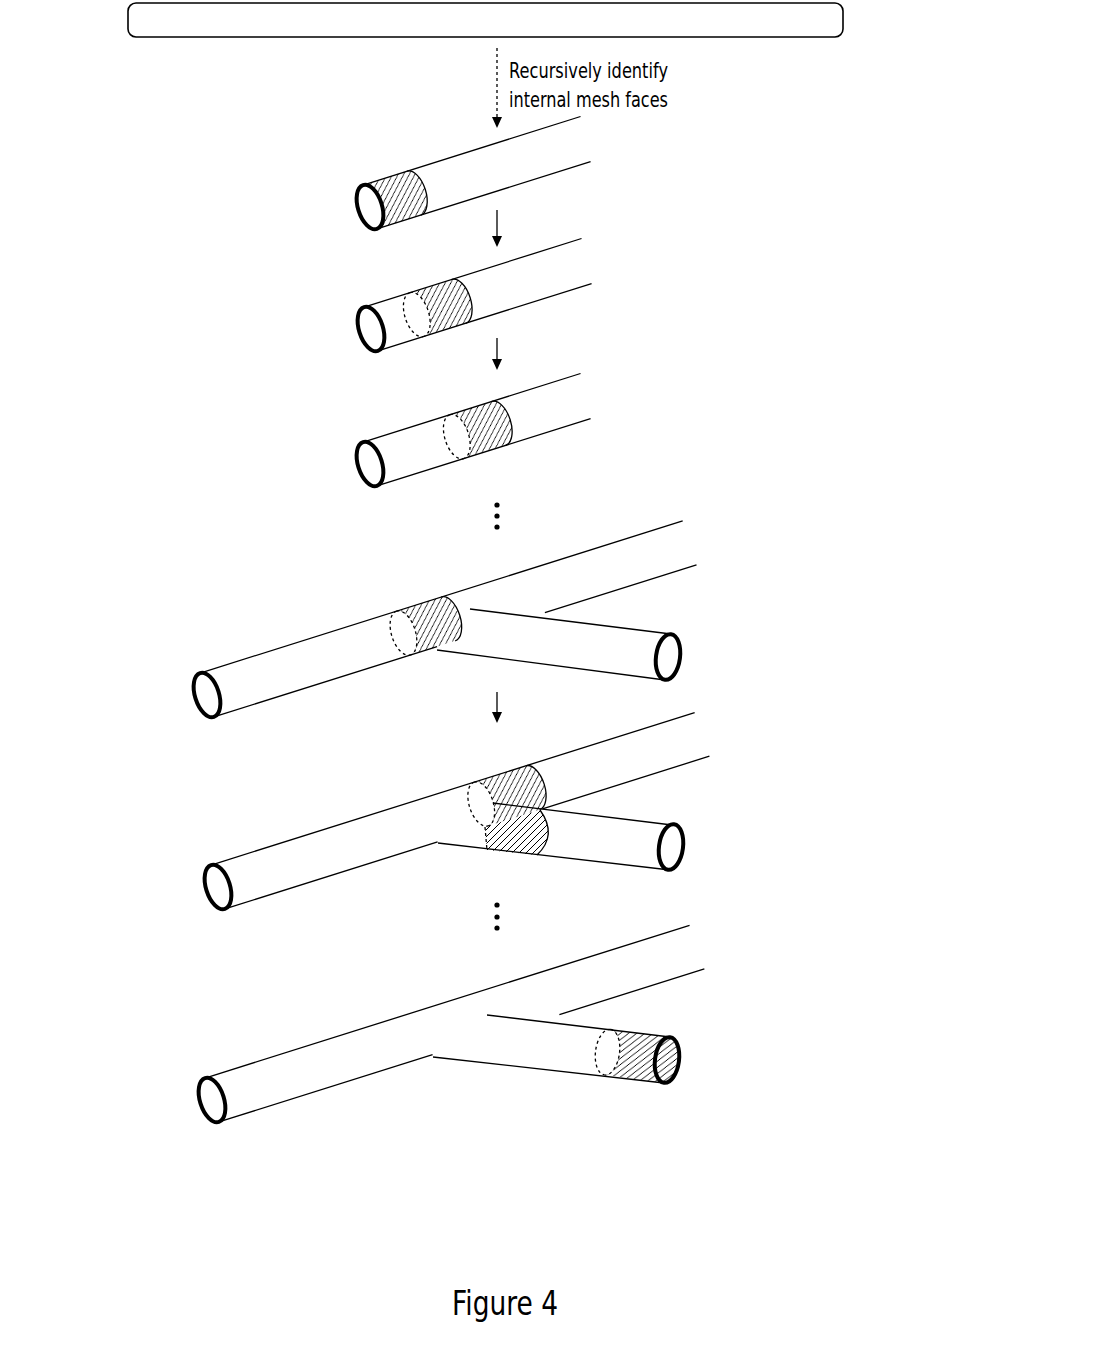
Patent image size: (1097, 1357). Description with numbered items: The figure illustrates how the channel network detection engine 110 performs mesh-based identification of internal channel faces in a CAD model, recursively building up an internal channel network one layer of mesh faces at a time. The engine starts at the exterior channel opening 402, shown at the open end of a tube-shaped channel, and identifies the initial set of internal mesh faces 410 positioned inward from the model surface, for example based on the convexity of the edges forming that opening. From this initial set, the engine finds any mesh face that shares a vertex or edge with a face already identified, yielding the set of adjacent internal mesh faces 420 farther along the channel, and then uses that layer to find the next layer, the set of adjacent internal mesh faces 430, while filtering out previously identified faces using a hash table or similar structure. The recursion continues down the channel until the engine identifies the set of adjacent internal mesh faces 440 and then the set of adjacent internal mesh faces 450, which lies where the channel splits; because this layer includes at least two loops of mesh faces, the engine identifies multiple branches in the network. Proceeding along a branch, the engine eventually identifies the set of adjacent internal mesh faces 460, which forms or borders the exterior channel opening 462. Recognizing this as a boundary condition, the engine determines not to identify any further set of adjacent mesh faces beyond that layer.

The channel network detection engine 110 is at (828, 32).
The initial set of internal mesh faces 410 is at (388, 179).
The exterior channel opening 402 is at (368, 210).
The set of adjacent internal mesh faces 420 is at (431, 286).
The set of adjacent internal mesh faces 430 is at (474, 407).
The set of adjacent internal mesh faces 440 is at (422, 604).
The set of adjacent internal mesh faces 450 is at (516, 824).
The set of adjacent internal mesh faces 460 is at (649, 1083).
The exterior channel opening 462 is at (674, 1049).